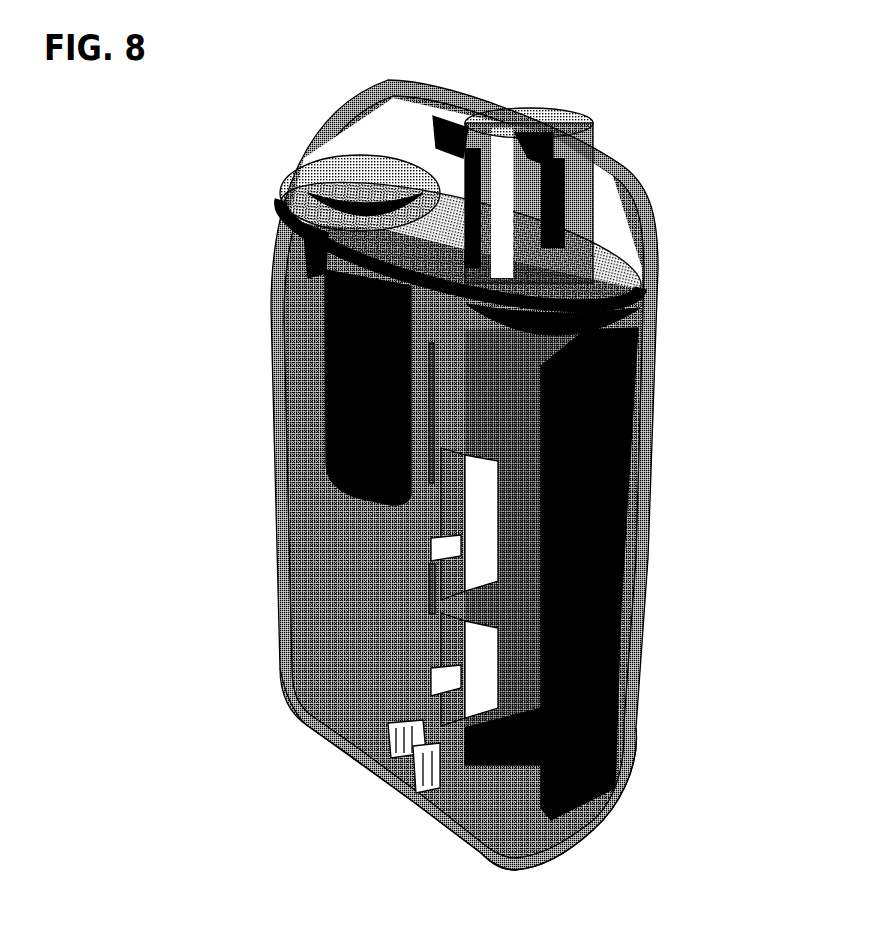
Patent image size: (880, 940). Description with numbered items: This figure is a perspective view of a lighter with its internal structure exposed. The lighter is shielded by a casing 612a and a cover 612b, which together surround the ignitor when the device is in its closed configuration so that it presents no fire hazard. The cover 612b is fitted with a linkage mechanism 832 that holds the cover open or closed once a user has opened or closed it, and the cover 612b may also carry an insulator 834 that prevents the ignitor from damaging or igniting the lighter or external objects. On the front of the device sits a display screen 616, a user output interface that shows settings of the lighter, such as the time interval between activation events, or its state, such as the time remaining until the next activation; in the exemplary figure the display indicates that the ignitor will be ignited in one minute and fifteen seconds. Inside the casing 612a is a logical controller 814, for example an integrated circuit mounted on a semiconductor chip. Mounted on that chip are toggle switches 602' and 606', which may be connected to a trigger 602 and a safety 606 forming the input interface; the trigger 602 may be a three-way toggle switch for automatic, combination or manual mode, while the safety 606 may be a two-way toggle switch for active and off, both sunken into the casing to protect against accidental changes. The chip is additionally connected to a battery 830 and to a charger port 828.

The trigger 602 is at (355, 528).
The toggle switch 602' is at (345, 493).
The safety 606 is at (322, 625).
The toggle switch 606' is at (361, 684).
The casing 612a is at (622, 700).
The cover 612b is at (641, 237).
The display screen 616 is at (330, 314).
The logical controller 814 is at (497, 733).
The charger port 828 is at (390, 757).
The battery 830 is at (598, 537).
The linkage mechanism 832 is at (500, 157).
The insulator 834 is at (340, 157).